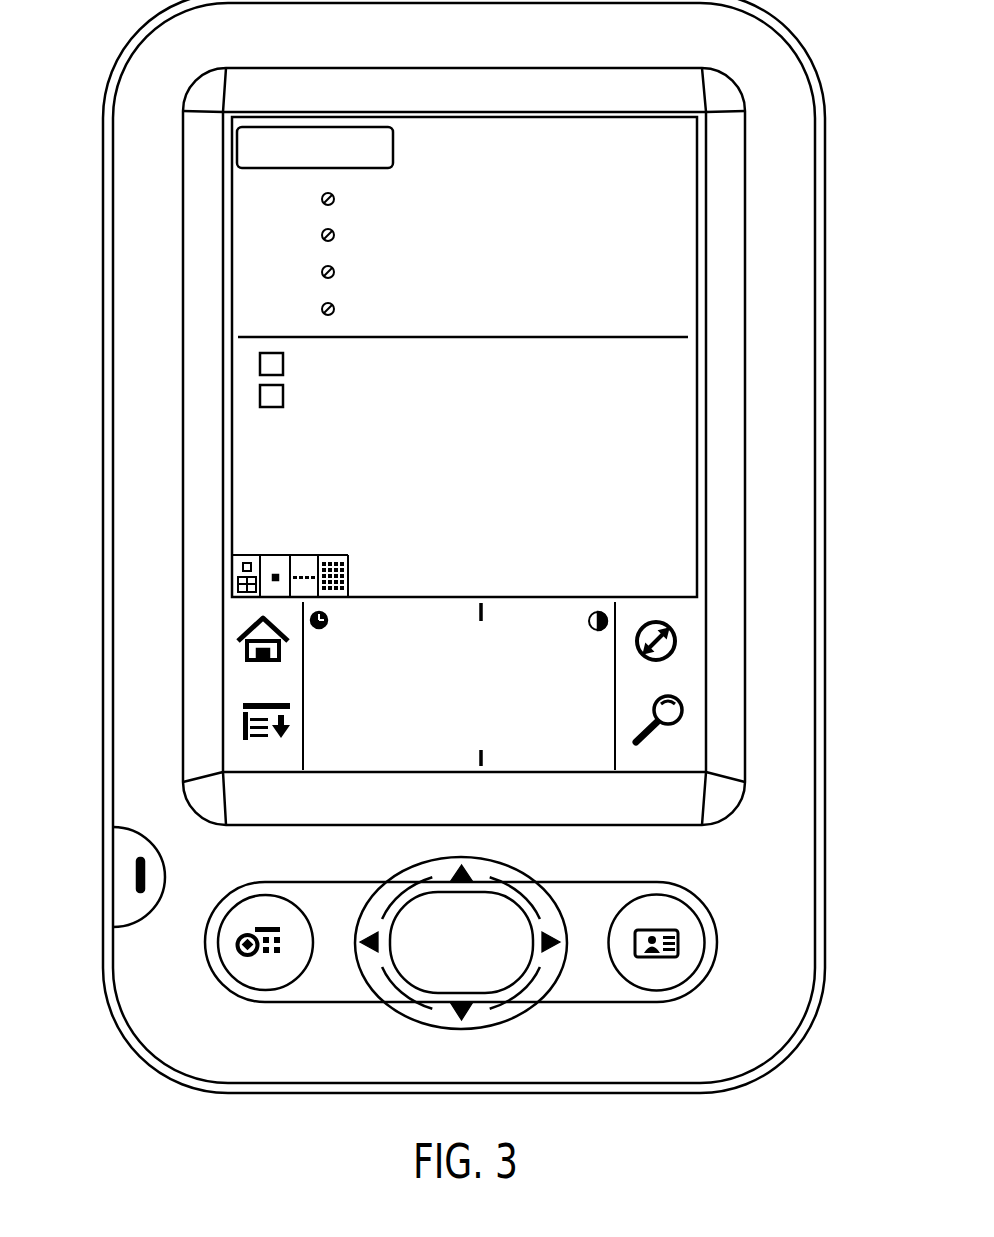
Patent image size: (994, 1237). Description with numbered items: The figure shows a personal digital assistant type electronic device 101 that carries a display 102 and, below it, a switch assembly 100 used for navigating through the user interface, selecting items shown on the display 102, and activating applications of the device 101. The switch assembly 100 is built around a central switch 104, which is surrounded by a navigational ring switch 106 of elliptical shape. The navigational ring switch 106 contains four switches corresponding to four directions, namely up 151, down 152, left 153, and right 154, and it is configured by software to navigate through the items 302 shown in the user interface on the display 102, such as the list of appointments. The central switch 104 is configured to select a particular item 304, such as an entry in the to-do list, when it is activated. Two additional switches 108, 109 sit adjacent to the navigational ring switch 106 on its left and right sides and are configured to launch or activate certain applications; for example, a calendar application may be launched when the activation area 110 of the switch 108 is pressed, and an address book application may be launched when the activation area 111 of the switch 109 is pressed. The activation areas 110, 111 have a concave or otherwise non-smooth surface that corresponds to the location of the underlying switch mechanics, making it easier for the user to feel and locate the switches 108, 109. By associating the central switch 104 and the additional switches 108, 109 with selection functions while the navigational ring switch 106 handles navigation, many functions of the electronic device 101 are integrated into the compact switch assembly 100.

The switch assembly 100 is at (682, 872).
The electronic device 101 is at (825, 741).
The display 102 is at (592, 66).
The central switch 104 is at (502, 968).
The navigational ring switch 106 is at (408, 875).
The switch 108 is at (322, 898).
The switch 109 is at (587, 905).
The activation area 110 is at (267, 962).
The activation area 111 is at (665, 962).
The up switch 151 is at (462, 868).
The down switch 152 is at (463, 1018).
The left switch 153 is at (371, 948).
The right switch 154 is at (553, 950).
The items 302 is at (605, 177).
The item 304 is at (260, 362).